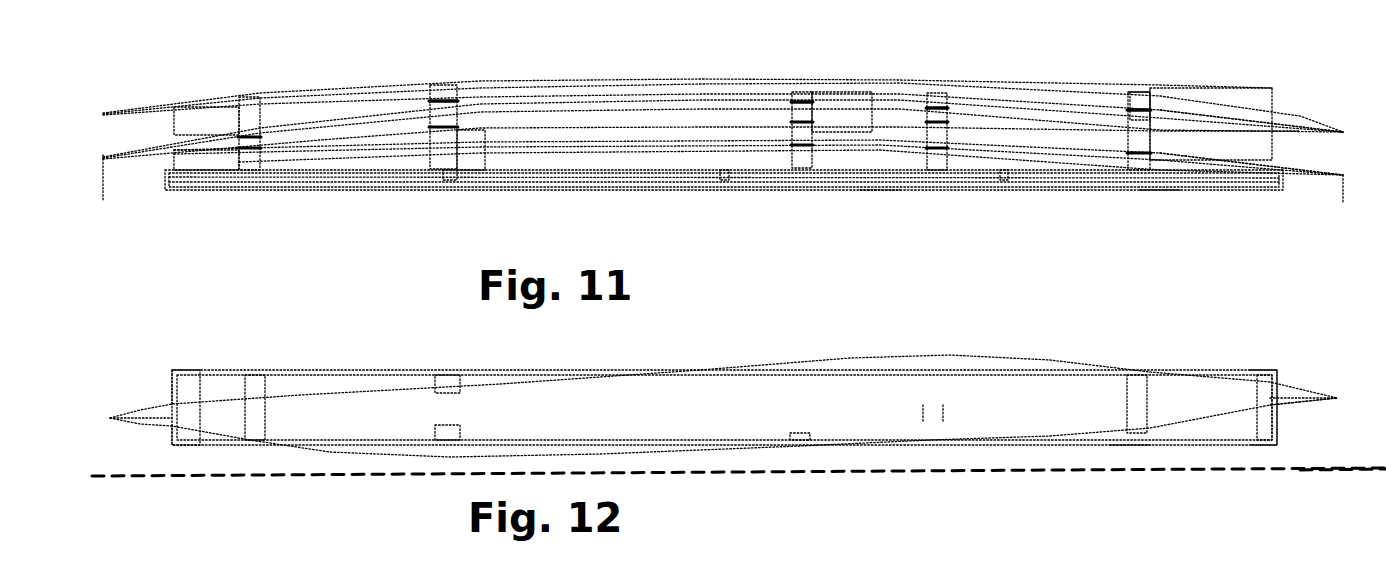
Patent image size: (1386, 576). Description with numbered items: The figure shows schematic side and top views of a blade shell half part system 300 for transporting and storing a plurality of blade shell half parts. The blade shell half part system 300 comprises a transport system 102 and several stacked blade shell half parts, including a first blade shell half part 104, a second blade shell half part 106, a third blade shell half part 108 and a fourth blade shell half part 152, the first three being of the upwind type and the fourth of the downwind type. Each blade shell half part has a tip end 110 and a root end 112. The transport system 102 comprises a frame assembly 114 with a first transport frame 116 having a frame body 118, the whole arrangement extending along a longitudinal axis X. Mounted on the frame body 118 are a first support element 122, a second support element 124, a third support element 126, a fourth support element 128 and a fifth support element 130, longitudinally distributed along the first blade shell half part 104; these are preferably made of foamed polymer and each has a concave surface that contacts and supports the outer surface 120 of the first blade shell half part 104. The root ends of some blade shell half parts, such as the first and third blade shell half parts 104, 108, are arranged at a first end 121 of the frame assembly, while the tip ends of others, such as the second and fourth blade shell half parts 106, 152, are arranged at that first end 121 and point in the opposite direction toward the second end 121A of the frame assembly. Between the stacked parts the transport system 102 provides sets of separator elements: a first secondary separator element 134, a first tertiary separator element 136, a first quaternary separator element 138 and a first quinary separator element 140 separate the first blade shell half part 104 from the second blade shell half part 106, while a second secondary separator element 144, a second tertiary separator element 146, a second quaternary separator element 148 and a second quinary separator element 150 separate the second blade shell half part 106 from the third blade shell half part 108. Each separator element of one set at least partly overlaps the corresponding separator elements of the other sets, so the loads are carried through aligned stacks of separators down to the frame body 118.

In FIG. 11, the blade shell half part system 300 is at (205, 72).
In FIG. 12, the blade shell half part system 300 is at (178, 330).
In FIG. 11, the transport system 102 is at (1157, 187).
In FIG. 11, the first blade shell half part 104 is at (1317, 171).
In FIG. 11, the second blade shell half part 106 is at (1245, 148).
In FIG. 11, the third blade shell half part 108 is at (1306, 131).
In FIG. 12, the third blade shell half part 108 is at (1302, 407).
In FIG. 11, the tip end 110 is at (1343, 176).
In FIG. 11, the root end 112 is at (174, 158).
In FIG. 11, the frame assembly 114 is at (1000, 187).
In FIG. 11, the first transport frame 116 is at (710, 190).
In FIG. 12, the first transport frame 116 is at (1128, 443).
In FIG. 11, the frame body 118 is at (877, 190).
In FIG. 11, the outer surface of the first blade shell half part 120 is at (280, 163).
In FIG. 11, the first support element 122 is at (250, 163).
In FIG. 11, the second support element 124 is at (443, 160).
In FIG. 11, the third support element 126 is at (797, 167).
In FIG. 11, the fourth support element 128 is at (937, 157).
In FIG. 11, the fifth support element 130 is at (1127, 170).
In FIG. 11, the first secondary separator element 134 is at (446, 139).
In FIG. 11, the first tertiary separator element 136 is at (799, 138).
In FIG. 11, the first quaternary separator element 138 is at (930, 140).
In FIG. 11, the first quinary separator element 140 is at (1137, 148).
In FIG. 11, the second secondary separator element 144 is at (447, 113).
In FIG. 11, the second tertiary separator element 146 is at (798, 112).
In FIG. 11, the second quaternary separator element 148 is at (941, 110).
In FIG. 11, the second quinary separator element 150 is at (1137, 113).
In FIG. 11, the fourth blade shell half part 152 is at (228, 97).
In FIG. 12, the first end of frame assembly 121 is at (172, 383).
In FIG. 12, the second end of frame assembly 121A is at (1277, 380).
In FIG. 12, the longitudinal axis X is at (1350, 470).